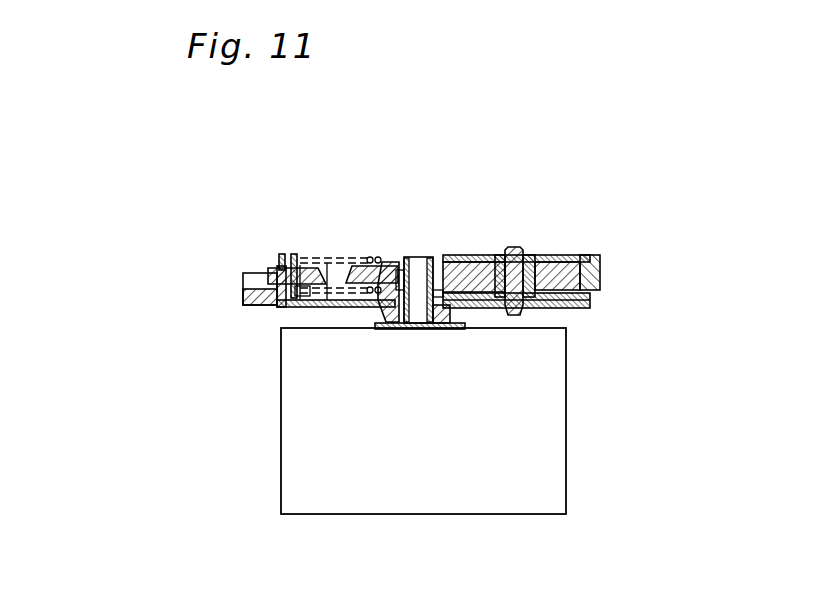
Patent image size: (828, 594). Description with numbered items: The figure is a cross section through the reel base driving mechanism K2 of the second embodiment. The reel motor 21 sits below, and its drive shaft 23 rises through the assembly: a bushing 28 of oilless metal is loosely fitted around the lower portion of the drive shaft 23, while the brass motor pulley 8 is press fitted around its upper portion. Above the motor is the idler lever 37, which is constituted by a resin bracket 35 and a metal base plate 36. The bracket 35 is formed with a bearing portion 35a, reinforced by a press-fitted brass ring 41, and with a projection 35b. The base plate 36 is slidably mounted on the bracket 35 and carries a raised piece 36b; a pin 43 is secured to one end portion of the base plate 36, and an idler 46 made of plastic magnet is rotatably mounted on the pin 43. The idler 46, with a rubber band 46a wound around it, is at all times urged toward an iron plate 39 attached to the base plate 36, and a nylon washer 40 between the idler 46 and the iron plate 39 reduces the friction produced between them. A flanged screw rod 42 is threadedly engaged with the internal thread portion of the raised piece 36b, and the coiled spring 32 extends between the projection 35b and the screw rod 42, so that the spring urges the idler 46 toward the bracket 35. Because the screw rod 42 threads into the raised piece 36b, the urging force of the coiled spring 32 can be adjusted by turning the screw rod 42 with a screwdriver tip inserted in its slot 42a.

The reel base driving mechanism K2 is at (586, 150).
The motor pulley 8 is at (418, 257).
The reel motor 21 is at (552, 455).
The drive shaft 23 is at (455, 257).
The bushing 28 is at (432, 329).
The coiled spring 32 is at (368, 256).
The bracket 35 is at (243, 294).
The bearing portion 35a is at (386, 323).
The projection 35b is at (396, 264).
The base plate 36 is at (292, 311).
The raised piece 36b is at (282, 254).
The idler lever 37 is at (243, 268).
The iron plate 39 is at (590, 297).
The washer 40 is at (520, 316).
The ring 41 is at (448, 323).
The flanged screw rod 42 is at (294, 254).
The slot 42a is at (270, 268).
The pin 43 is at (520, 247).
The idler 46 is at (577, 256).
The rubber band 46a is at (600, 266).